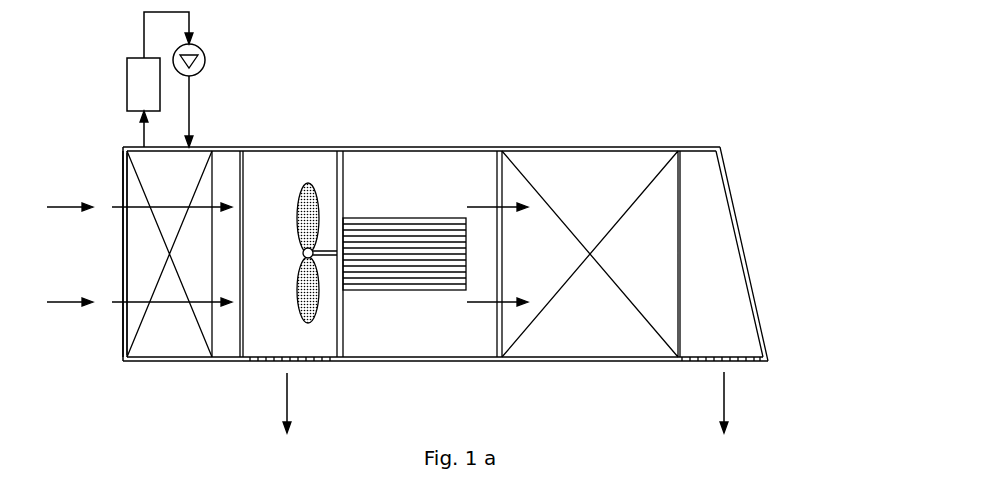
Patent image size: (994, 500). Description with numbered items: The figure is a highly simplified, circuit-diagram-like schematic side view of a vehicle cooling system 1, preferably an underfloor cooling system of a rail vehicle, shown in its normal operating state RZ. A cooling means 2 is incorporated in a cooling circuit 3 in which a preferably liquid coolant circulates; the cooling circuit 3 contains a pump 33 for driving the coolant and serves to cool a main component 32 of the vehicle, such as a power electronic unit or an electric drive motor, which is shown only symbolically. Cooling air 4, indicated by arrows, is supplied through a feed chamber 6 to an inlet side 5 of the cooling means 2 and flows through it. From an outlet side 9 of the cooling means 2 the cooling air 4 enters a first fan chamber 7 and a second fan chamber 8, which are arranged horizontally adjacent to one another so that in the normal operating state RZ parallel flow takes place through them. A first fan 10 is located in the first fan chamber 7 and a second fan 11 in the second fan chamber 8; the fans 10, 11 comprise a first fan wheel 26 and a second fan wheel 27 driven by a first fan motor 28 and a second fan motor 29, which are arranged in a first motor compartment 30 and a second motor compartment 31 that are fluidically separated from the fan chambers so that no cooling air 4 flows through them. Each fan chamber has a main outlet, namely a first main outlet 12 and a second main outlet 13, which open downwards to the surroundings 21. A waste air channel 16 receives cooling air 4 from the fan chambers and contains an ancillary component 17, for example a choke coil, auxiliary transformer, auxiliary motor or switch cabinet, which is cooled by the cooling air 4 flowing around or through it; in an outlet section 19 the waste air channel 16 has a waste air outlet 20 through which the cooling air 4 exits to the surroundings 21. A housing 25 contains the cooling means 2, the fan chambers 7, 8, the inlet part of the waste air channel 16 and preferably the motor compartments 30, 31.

The vehicle cooling system 1 is at (759, 125).
The cooling means 2 is at (183, 262).
The cooling circuit 3 is at (144, 33).
The cooling air 4 is at (65, 205).
The inlet side 5 is at (123, 328).
The feed chamber 6 is at (96, 262).
The first fan chamber 7 is at (291, 254).
The second fan chamber 8 is at (254, 259).
The outlet side 9 is at (213, 173).
The first fan 10 is at (306, 208).
The second fan 11 is at (306, 208).
The first main outlet 12 is at (270, 390).
The second main outlet 13 is at (252, 362).
The waste air channel 16 is at (713, 231).
The ancillary component 17 is at (582, 202).
The outlet section 19 is at (720, 282).
The waste air outlet 20 is at (700, 362).
The surroundings 21 is at (276, 469).
The housing 25 is at (420, 146).
The first fan wheel 26 is at (306, 208).
The second fan wheel 27 is at (307, 181).
The first fan motor 28 is at (404, 230).
The second fan motor 29 is at (406, 237).
The first motor compartment 30 is at (446, 254).
The second motor compartment 31 is at (400, 332).
The main component 32 is at (127, 83).
The pump 33 is at (205, 60).
The normal operating state RZ is at (493, 118).